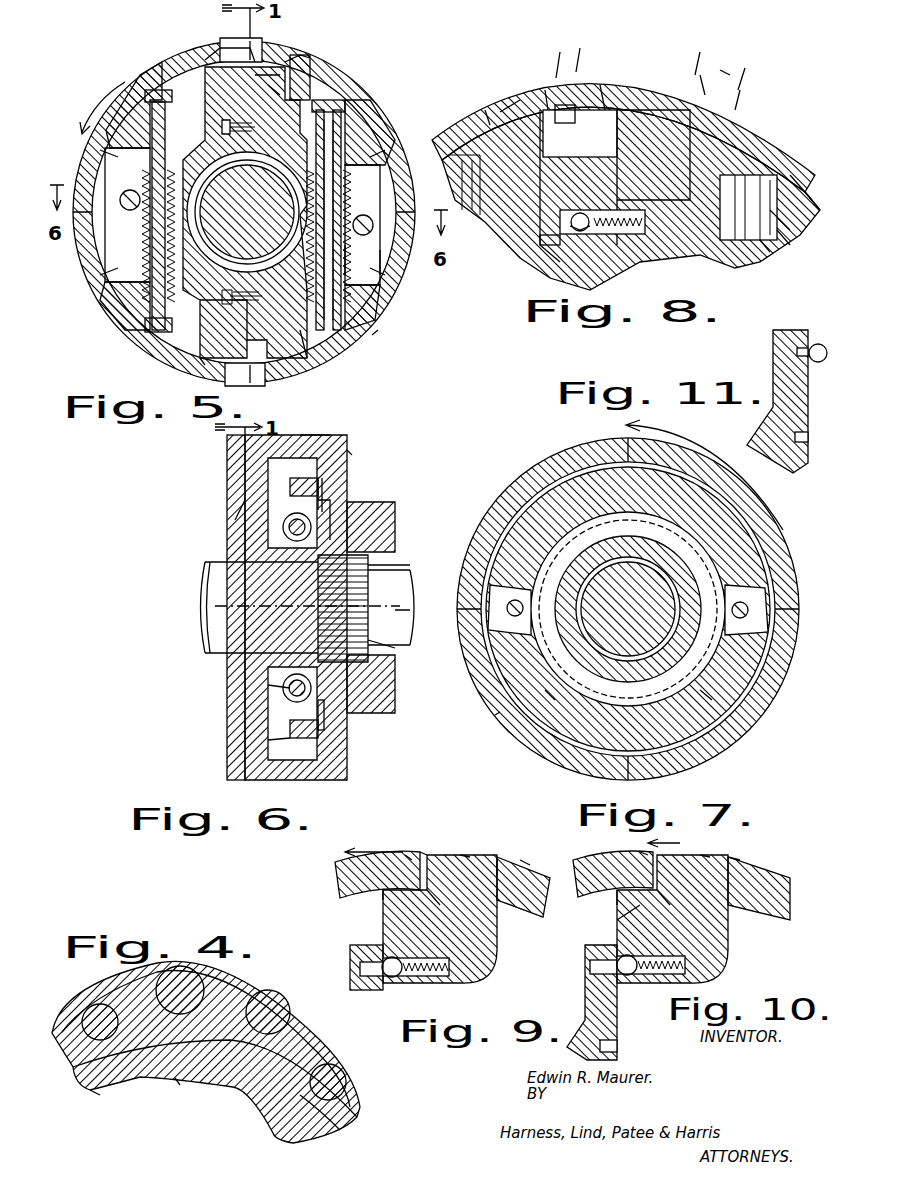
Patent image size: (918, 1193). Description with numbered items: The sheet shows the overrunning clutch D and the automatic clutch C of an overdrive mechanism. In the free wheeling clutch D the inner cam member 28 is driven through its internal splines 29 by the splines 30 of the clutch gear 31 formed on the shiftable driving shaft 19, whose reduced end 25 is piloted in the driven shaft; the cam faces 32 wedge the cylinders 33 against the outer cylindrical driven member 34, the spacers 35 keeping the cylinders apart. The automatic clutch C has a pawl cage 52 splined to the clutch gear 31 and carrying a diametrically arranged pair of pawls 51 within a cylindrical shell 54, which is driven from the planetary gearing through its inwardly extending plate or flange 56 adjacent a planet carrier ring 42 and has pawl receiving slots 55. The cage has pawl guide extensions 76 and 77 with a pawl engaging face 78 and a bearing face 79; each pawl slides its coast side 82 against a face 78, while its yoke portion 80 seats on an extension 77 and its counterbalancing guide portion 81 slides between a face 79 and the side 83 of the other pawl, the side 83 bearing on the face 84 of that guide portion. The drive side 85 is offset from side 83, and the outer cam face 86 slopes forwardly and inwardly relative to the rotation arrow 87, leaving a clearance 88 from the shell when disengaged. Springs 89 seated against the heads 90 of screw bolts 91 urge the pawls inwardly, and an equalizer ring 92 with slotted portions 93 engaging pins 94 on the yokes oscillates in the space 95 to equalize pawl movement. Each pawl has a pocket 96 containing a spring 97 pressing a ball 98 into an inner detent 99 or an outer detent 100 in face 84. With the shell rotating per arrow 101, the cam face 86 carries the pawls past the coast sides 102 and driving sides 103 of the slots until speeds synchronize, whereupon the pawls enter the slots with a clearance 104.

In FIG. 5, the shiftable driving shaft 19 is at (220, 185).
In FIG. 6, the shiftable driving shaft 19 is at (205, 608).
In FIG. 6, the reduced end of shaft 25 is at (395, 592).
In FIG. 6, the inner cam member 28 is at (375, 505).
In FIG. 4, the inner cam member 28 is at (140, 1080).
In FIG. 6, the internal splines 29 is at (395, 660).
In FIG. 6, the splines of clutch gear 30 is at (335, 615).
In FIG. 7, the splines of clutch gear 30 is at (670, 545).
In FIG. 6, the clutch gear 31 is at (315, 590).
In FIG. 7, the clutch gear 31 is at (637, 700).
In FIG. 4, the cam faces 32 is at (175, 1080).
In FIG. 4, the cylinders 33 is at (340, 1090).
In FIG. 4, the outer cylindrical driven member 34 is at (340, 1060).
In FIG. 4, the spacers 35 is at (290, 1005).
In FIG. 6, the planet carrier ring 42 is at (227, 495).
In FIG. 5, the pawls 51 is at (285, 70).
In FIG. 9, the pawls 51 is at (500, 855).
In FIG. 10, the pawls 51 is at (640, 910).
In FIG. 6, the pawl cage 52 is at (350, 478).
In FIG. 7, the pawl cage 52 is at (690, 698).
In FIG. 5, the shell 54 is at (375, 150).
In FIG. 8, the shell 54 is at (790, 140).
In FIG. 6, the shell 54 is at (315, 424).
In FIG. 7, the shell 54 is at (770, 505).
In FIG. 9, the shell 54 is at (525, 860).
In FIG. 10, the shell 54 is at (780, 878).
In FIG. 5, the pawl receiving slots 55 is at (98, 282).
In FIG. 8, the pawl receiving slots 55 is at (660, 70).
In FIG. 7, the pawl receiving slots 55 is at (780, 530).
In FIG. 9, the pawl receiving slots 55 is at (425, 860).
In FIG. 10, the pawl receiving slots 55 is at (660, 858).
In FIG. 6, the plate or flange 56 is at (245, 522).
In FIG. 5, the pawl guide extension 76 is at (120, 320).
In FIG. 8, the pawl guide extension 76 is at (785, 222).
In FIG. 5, the pawl guide extension 77 is at (165, 90).
In FIG. 8, the pawl guide extension 77 is at (512, 100).
In FIG. 5, the pawl engaging face 78 is at (340, 110).
In FIG. 8, the pawl engaging face 78 is at (690, 160).
In FIG. 5, the bearing face 79 is at (207, 75).
In FIG. 8, the bearing face 79 is at (525, 100).
In FIG. 5, the yoke portion 80 is at (358, 180).
In FIG. 6, the yoke portion 80 is at (283, 738).
In FIG. 5, the counterbalancing guide portion 81 is at (320, 358).
In FIG. 11, the counterbalancing guide portion 81 is at (773, 370).
In FIG. 9, the counterbalancing guide portion 81 is at (355, 945).
In FIG. 10, the counterbalancing guide portion 81 is at (585, 985).
In FIG. 5, the coast side 82 is at (305, 80).
In FIG. 8, the coast side 82 is at (680, 218).
In FIG. 9, the coast side 82 is at (497, 925).
In FIG. 10, the coast side 82 is at (728, 935).
In FIG. 5, the pawl side 83 is at (240, 124).
In FIG. 8, the pawl side 83 is at (575, 260).
In FIG. 9, the pawl side 83 is at (383, 900).
In FIG. 10, the pawl side 83 is at (617, 900).
In FIG. 5, the face of guide portion 84 is at (215, 58).
In FIG. 8, the face of guide portion 84 is at (560, 95).
In FIG. 5, the drive side 85 is at (238, 55).
In FIG. 8, the drive side 85 is at (578, 177).
In FIG. 9, the drive side 85 is at (443, 903).
In FIG. 10, the drive side 85 is at (679, 894).
In FIG. 5, the cam face 86 is at (205, 372).
In FIG. 8, the cam face 86 is at (690, 95).
In FIG. 9, the cam face 86 is at (468, 855).
In FIG. 10, the cam face 86 is at (705, 855).
In FIG. 5, the arrow 87 is at (100, 95).
In FIG. 5, the clearance 88 is at (290, 60).
In FIG. 5, the springs 89 is at (382, 165).
In FIG. 8, the springs 89 is at (778, 240).
In FIG. 6, the springs 89 is at (268, 685).
In FIG. 5, the head of screw bolt 90 is at (355, 135).
In FIG. 8, the head of screw bolt 90 is at (780, 170).
In FIG. 5, the screw bolt 91 is at (140, 100).
In FIG. 8, the screw bolt 91 is at (500, 100).
In FIG. 6, the screw bolt 91 is at (297, 545).
In FIG. 6, the equalizer ring 92 is at (350, 725).
In FIG. 7, the equalizer ring 92 is at (605, 548).
In FIG. 6, the slotted portions 93 is at (373, 755).
In FIG. 7, the slotted portions 93 is at (452, 628).
In FIG. 5, the pins 94 is at (363, 215).
In FIG. 6, the pins 94 is at (290, 480).
In FIG. 7, the pins 94 is at (505, 608).
In FIG. 6, the space 95 is at (350, 492).
In FIG. 8, the pocket 96 is at (600, 210).
In FIG. 5, the spring 97 is at (228, 136).
In FIG. 8, the spring 97 is at (636, 214).
In FIG. 9, the spring 97 is at (440, 978).
In FIG. 10, the spring 97 is at (672, 976).
In FIG. 5, the ball 98 is at (262, 294).
In FIG. 8, the ball 98 is at (583, 212).
In FIG. 11, the ball 98 is at (820, 343).
In FIG. 9, the ball 98 is at (392, 978).
In FIG. 10, the ball 98 is at (630, 976).
In FIG. 5, the inner detent 99 is at (362, 260).
In FIG. 8, the inner detent 99 is at (540, 262).
In FIG. 11, the inner detent 99 is at (808, 432).
In FIG. 10, the inner detent 99 is at (617, 1046).
In FIG. 5, the outer detent 100 is at (262, 340).
In FIG. 8, the outer detent 100 is at (570, 105).
In FIG. 11, the outer detent 100 is at (803, 345).
In FIG. 9, the outer detent 100 is at (372, 960).
In FIG. 10, the outer detent 100 is at (590, 966).
In FIG. 8, the arrow 101 is at (765, 110).
In FIG. 8, the coast side of slot 102 is at (728, 95).
In FIG. 9, the coast side of slot 102 is at (522, 858).
In FIG. 8, the driving side of slot 103 is at (612, 95).
In FIG. 9, the driving side of slot 103 is at (410, 852).
In FIG. 10, the driving side of slot 103 is at (648, 852).
In FIG. 9, the clearance 104 is at (430, 852).
In FIG. 10, the clearance 104 is at (740, 860).
In FIG. 5, the automatic clutch C is at (378, 333).
In FIG. 8, the automatic clutch C is at (752, 84).
In FIG. 6, the automatic clutch C is at (363, 453).
In FIG. 7, the automatic clutch C is at (491, 724).
In FIG. 4, the free wheeling clutch D is at (279, 977).